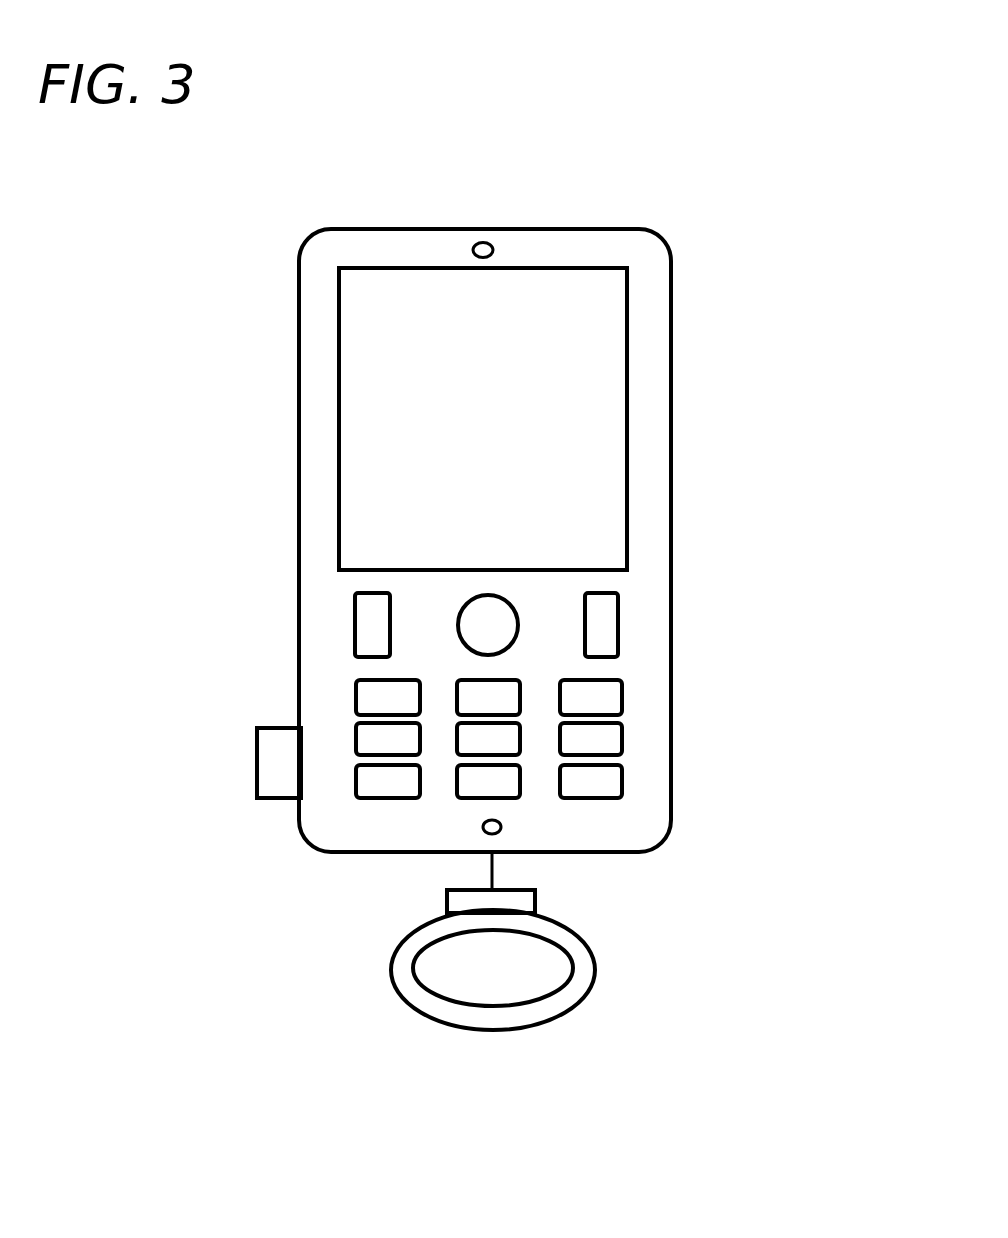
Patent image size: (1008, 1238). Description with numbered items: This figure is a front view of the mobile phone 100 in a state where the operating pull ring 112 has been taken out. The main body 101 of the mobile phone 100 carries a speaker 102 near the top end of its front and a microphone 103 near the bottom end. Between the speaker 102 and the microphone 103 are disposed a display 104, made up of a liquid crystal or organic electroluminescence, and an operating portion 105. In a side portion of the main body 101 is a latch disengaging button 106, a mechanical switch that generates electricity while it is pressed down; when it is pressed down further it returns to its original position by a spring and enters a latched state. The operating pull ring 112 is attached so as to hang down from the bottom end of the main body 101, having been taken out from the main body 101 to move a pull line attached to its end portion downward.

The mobile phone 100 is at (740, 285).
The main body 101 is at (297, 422).
The speaker 102 is at (485, 240).
The microphone 103 is at (482, 830).
The display 104 is at (583, 425).
The operating portion 105 is at (645, 663).
The latch disengaging button 106 is at (257, 758).
The operating pull ring 112 is at (507, 1013).